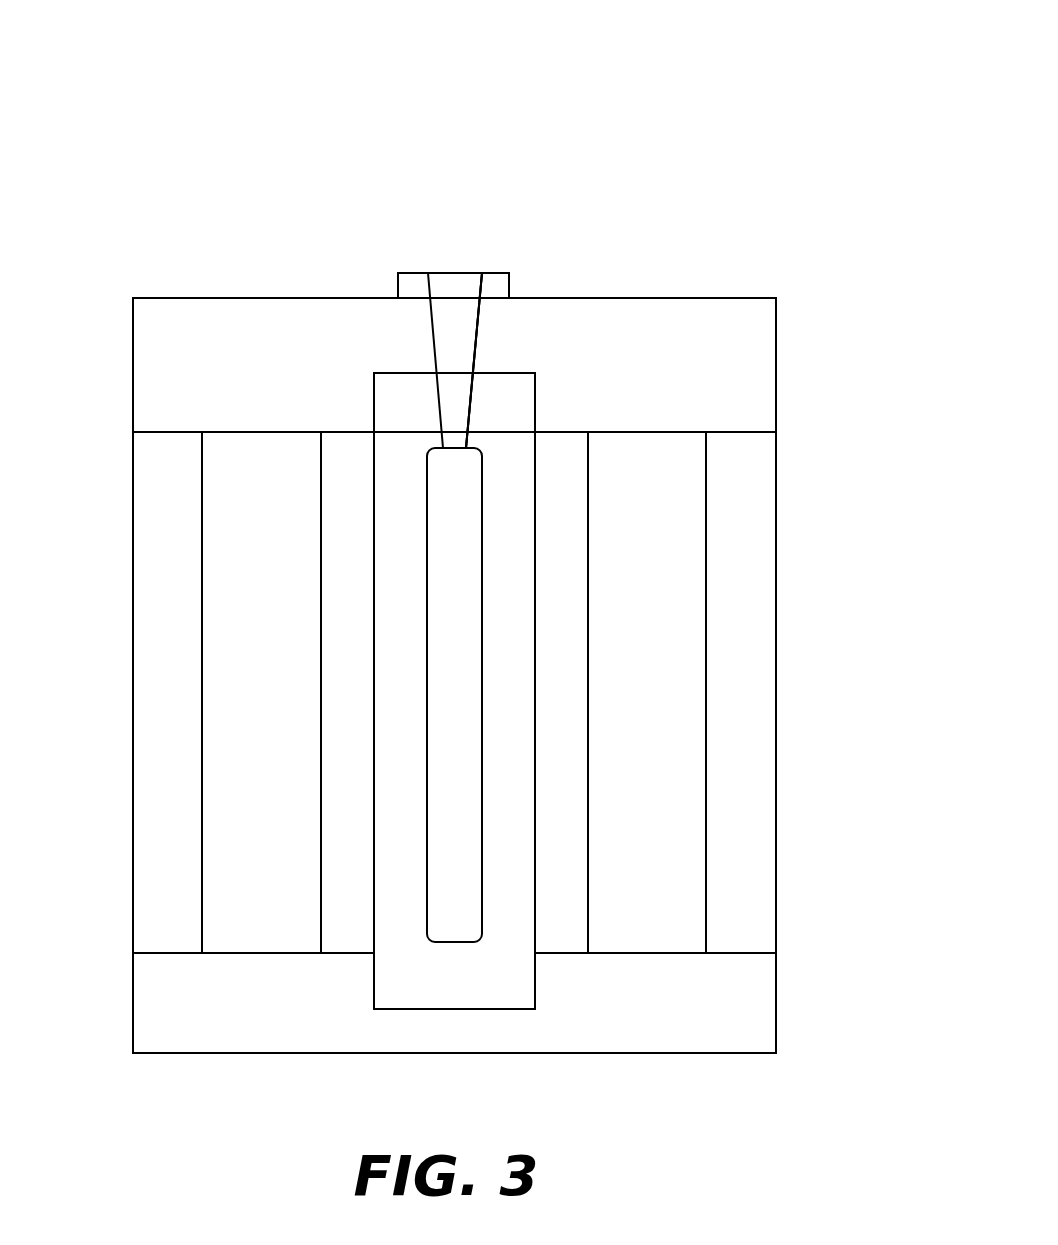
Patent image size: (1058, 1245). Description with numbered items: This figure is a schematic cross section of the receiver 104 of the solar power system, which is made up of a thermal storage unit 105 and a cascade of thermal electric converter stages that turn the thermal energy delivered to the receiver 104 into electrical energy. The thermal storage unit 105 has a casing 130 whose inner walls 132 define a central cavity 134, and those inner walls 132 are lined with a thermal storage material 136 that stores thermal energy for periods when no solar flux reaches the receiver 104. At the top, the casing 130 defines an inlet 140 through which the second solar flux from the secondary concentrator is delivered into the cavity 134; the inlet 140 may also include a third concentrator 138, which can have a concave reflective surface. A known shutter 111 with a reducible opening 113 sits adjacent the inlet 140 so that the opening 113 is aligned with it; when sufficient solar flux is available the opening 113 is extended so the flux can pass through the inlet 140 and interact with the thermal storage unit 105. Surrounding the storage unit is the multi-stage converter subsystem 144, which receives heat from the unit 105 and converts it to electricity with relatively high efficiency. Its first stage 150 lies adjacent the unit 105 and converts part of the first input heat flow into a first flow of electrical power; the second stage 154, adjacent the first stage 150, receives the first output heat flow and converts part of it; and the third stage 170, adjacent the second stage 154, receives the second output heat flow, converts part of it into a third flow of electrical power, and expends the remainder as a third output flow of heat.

The receiver 104 is at (525, 92).
The thermal storage unit 105 is at (398, 460).
The shutter 111 is at (413, 273).
The reducible opening 113 is at (473, 280).
The casing 130 is at (537, 407).
The inner walls 132 is at (402, 1010).
The cavity 134 is at (430, 758).
The thermal storage material 136 is at (535, 477).
The third concentrator 138 is at (470, 400).
The inlet 140 is at (455, 403).
The multi-stage converter subsystem 144 is at (812, 705).
The first stage 150 is at (342, 520).
The second stage 154 is at (263, 725).
The third stage 170 is at (153, 895).